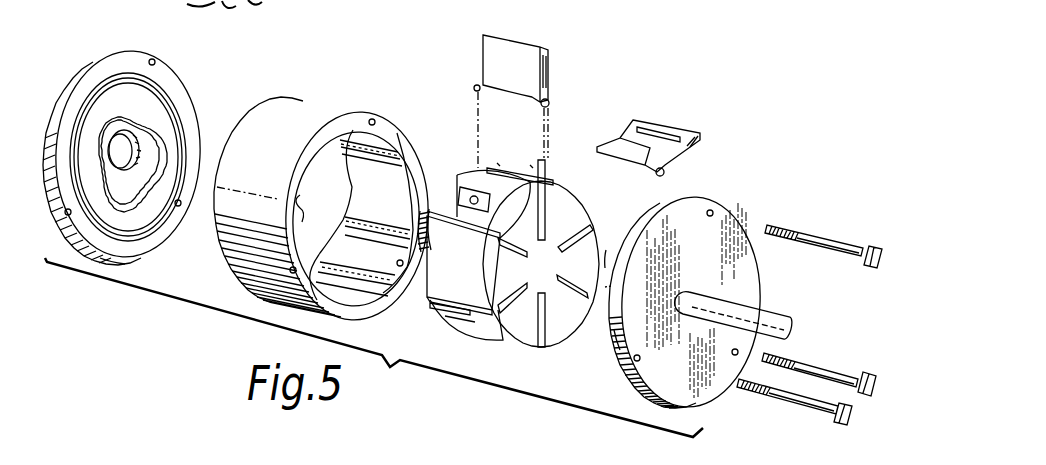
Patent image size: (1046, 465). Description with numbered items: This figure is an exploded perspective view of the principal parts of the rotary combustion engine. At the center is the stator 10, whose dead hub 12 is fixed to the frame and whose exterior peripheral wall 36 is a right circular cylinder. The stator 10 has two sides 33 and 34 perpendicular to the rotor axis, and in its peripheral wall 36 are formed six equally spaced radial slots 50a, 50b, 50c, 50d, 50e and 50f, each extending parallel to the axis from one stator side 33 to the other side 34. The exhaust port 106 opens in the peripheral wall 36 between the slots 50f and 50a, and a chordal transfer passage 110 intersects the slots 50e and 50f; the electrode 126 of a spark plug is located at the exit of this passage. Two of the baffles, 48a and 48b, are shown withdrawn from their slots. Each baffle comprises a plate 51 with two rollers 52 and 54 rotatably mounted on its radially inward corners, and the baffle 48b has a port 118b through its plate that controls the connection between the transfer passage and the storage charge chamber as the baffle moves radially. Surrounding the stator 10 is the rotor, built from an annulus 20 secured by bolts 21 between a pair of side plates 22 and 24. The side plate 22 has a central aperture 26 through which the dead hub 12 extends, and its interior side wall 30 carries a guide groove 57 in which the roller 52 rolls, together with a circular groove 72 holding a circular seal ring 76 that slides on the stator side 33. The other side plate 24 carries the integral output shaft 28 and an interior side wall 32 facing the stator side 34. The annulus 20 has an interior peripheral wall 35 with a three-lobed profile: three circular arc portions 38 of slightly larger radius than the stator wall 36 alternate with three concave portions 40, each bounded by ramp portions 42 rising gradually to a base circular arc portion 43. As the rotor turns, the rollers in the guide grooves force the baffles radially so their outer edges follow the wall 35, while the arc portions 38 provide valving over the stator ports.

The stator 10 is at (528, 325).
The dead hub 12 is at (424, 252).
The annulus 20 is at (285, 118).
The bolts 21 is at (807, 228).
The side plate 22 is at (86, 72).
The side plate 24 is at (680, 200).
The central aperture 26 is at (130, 165).
The shaft 28 is at (770, 318).
The interior side wall 30 is at (110, 252).
The interior side wall 32 is at (616, 340).
The stator side 33 is at (441, 318).
The stator side 34 is at (505, 320).
The interior peripheral wall 35 is at (373, 180).
The exterior peripheral wall 36 is at (606, 258).
The circular arc portions 38 is at (345, 255).
The concave portion 40 is at (298, 195).
The ramp portions 42 is at (360, 148).
The circular arc portion 43 is at (395, 178).
The baffle 48a is at (555, 41).
The baffle 48b is at (645, 111).
The radial slot 50a is at (548, 200).
The radial slot 50b is at (595, 232).
The radial slot 50c is at (567, 290).
The radial slot 50d is at (545, 345).
The radial slot 50e is at (432, 300).
The radial slot 50f is at (509, 263).
The plate 51 is at (505, 52).
The roller 52 is at (474, 85).
The roller 54 is at (548, 100).
The guide groove 57 is at (155, 126).
The circular groove 72 is at (137, 82).
The circular seal ring 76 is at (166, 88).
The exhaust port 106 is at (496, 168).
The transfer passage 110 is at (460, 208).
The port 118b is at (660, 140).
The electrode 126 is at (461, 213).